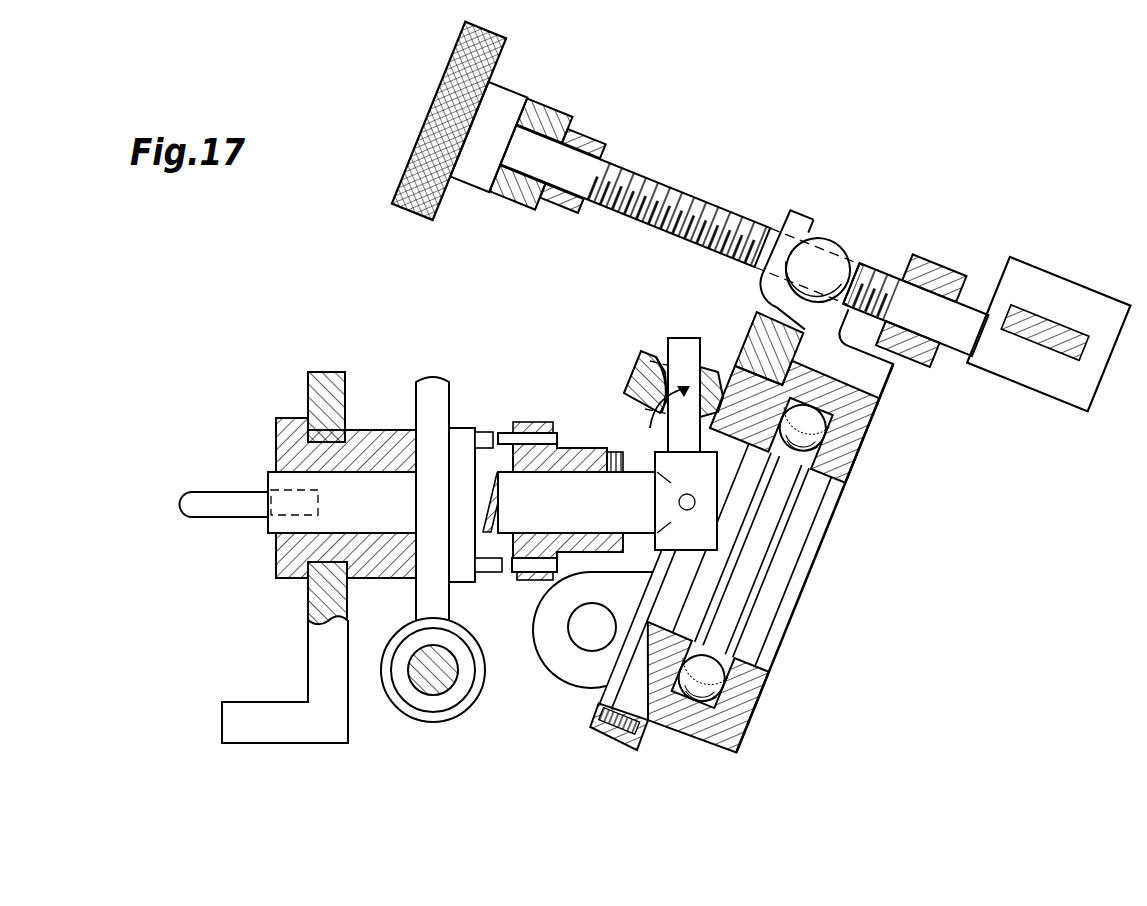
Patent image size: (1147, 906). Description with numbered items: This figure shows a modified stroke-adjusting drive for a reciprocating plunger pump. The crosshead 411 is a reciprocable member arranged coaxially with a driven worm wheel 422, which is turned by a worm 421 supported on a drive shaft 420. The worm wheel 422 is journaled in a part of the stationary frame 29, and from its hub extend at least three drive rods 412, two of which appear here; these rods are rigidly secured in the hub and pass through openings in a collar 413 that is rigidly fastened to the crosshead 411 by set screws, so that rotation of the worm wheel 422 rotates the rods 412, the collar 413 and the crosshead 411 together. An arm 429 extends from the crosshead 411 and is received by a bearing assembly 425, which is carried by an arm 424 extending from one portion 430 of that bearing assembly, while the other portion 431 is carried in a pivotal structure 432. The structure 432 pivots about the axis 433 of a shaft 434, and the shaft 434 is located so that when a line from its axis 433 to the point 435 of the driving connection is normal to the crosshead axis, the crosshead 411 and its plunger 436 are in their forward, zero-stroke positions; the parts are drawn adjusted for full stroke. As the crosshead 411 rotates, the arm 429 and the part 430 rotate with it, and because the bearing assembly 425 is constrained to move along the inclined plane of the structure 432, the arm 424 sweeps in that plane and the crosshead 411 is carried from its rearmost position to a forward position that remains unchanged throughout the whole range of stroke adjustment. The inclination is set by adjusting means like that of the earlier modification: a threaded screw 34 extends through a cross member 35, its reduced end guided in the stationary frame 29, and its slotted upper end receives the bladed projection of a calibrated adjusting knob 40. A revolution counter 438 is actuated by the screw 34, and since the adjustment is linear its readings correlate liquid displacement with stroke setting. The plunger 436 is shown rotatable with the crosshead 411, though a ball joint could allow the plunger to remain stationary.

The stationary frame 29 is at (531, 198).
The threaded member or screw 34 is at (641, 176).
The cross member 35 is at (832, 242).
The calibrated adjusting knob 40 is at (453, 88).
The crosshead 411 is at (485, 487).
The drive rods 412 is at (517, 428).
The collar 413 is at (607, 467).
The drive shaft 420 is at (419, 678).
The worm 421 is at (458, 704).
The worm wheel 422 is at (416, 395).
The arm 424 is at (638, 370).
The bearing assembly 425 is at (660, 360).
The arm 429 is at (690, 350).
The portion of bearing assembly 430 is at (763, 373).
The portion of bearing assembly 431 is at (856, 431).
The pivotal structure 432 is at (850, 470).
The axis 433 is at (591, 630).
The shaft 434 is at (569, 631).
The point of driving connection 435 is at (652, 429).
The plunger 436 is at (210, 492).
The revolution counter 438 is at (1063, 400).